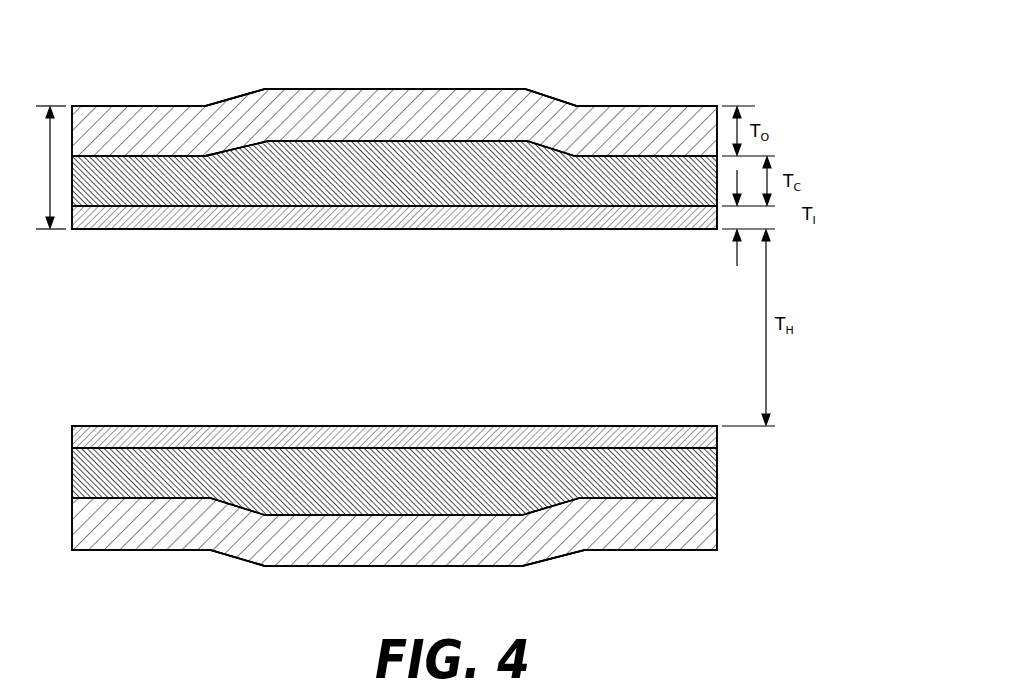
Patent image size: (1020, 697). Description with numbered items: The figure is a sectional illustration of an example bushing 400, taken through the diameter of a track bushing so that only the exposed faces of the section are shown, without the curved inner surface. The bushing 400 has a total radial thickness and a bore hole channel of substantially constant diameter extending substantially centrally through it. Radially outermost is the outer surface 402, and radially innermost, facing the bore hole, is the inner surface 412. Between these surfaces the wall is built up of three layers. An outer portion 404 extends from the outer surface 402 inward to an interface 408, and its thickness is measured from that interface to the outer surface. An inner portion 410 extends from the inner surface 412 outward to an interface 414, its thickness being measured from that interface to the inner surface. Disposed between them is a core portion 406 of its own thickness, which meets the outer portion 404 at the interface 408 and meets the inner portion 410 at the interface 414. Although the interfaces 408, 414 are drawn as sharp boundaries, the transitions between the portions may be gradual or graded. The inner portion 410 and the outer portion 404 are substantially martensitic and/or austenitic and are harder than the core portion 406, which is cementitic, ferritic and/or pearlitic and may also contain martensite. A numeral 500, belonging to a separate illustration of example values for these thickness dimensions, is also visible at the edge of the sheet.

The bushing 400 is at (808, 46).
The outer surface 402 is at (96, 104).
The outer portion 404 is at (203, 117).
The core portion 406 is at (507, 158).
The interface 408 is at (380, 140).
The inner portion 410 is at (276, 217).
The inner surface 412 is at (388, 231).
The interface 414 is at (540, 231).
The laminated glass article (next figure) 500 is at (851, 691).